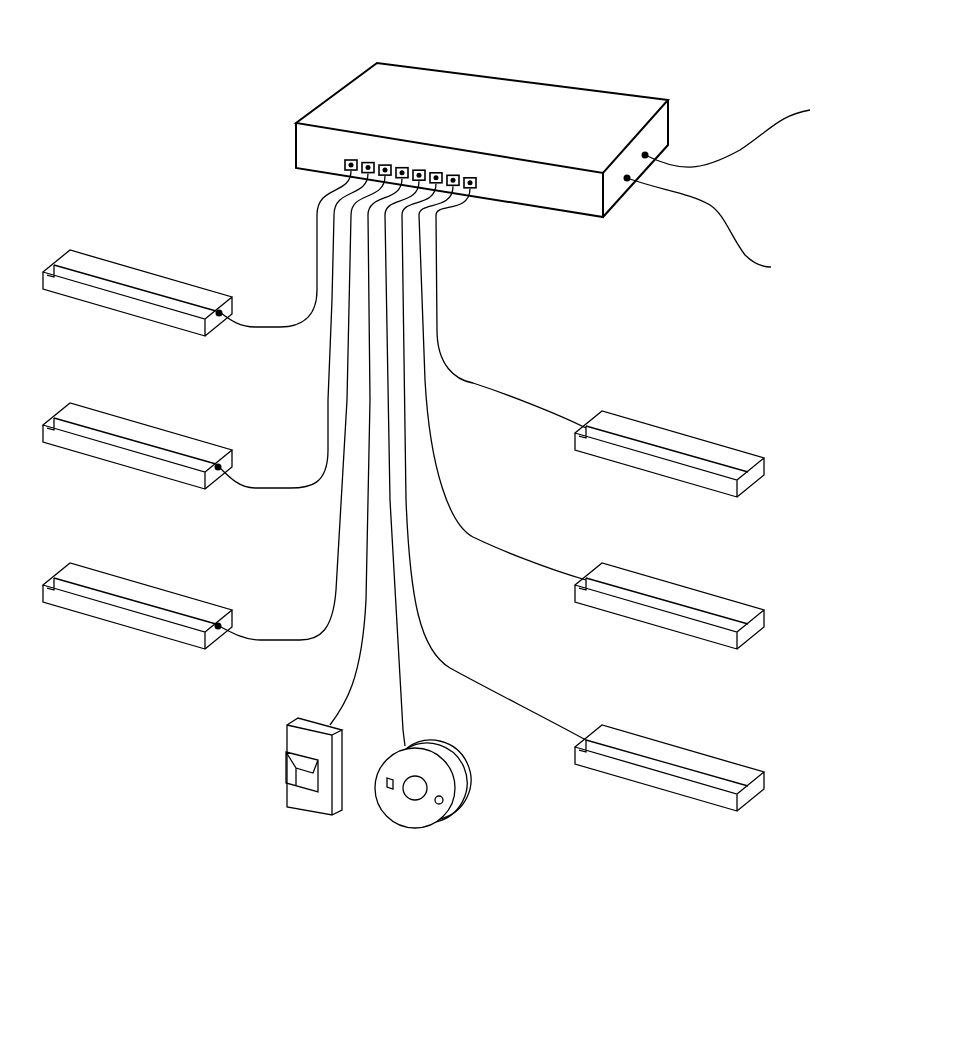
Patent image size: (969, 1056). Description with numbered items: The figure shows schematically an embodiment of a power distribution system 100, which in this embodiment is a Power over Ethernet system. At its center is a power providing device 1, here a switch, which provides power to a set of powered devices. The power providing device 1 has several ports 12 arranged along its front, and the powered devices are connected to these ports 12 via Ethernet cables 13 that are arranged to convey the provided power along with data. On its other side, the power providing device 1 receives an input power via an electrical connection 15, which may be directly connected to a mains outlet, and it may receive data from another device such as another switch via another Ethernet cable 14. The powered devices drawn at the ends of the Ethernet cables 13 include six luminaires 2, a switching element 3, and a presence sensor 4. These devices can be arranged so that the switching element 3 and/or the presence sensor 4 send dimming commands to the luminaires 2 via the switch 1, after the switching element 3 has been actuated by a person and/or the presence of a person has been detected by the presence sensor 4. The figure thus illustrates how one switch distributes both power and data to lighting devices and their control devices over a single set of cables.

The power distribution system 100 is at (168, 55).
The power providing device 1 is at (634, 205).
The ports 12 is at (390, 147).
The Ethernet cables 13 is at (300, 232).
The another Ethernet cable 14 is at (737, 155).
The electrical connection 15 is at (747, 257).
The luminaires 2 is at (118, 271).
The switching element 3 is at (285, 759).
The presence sensor 4 is at (458, 821).